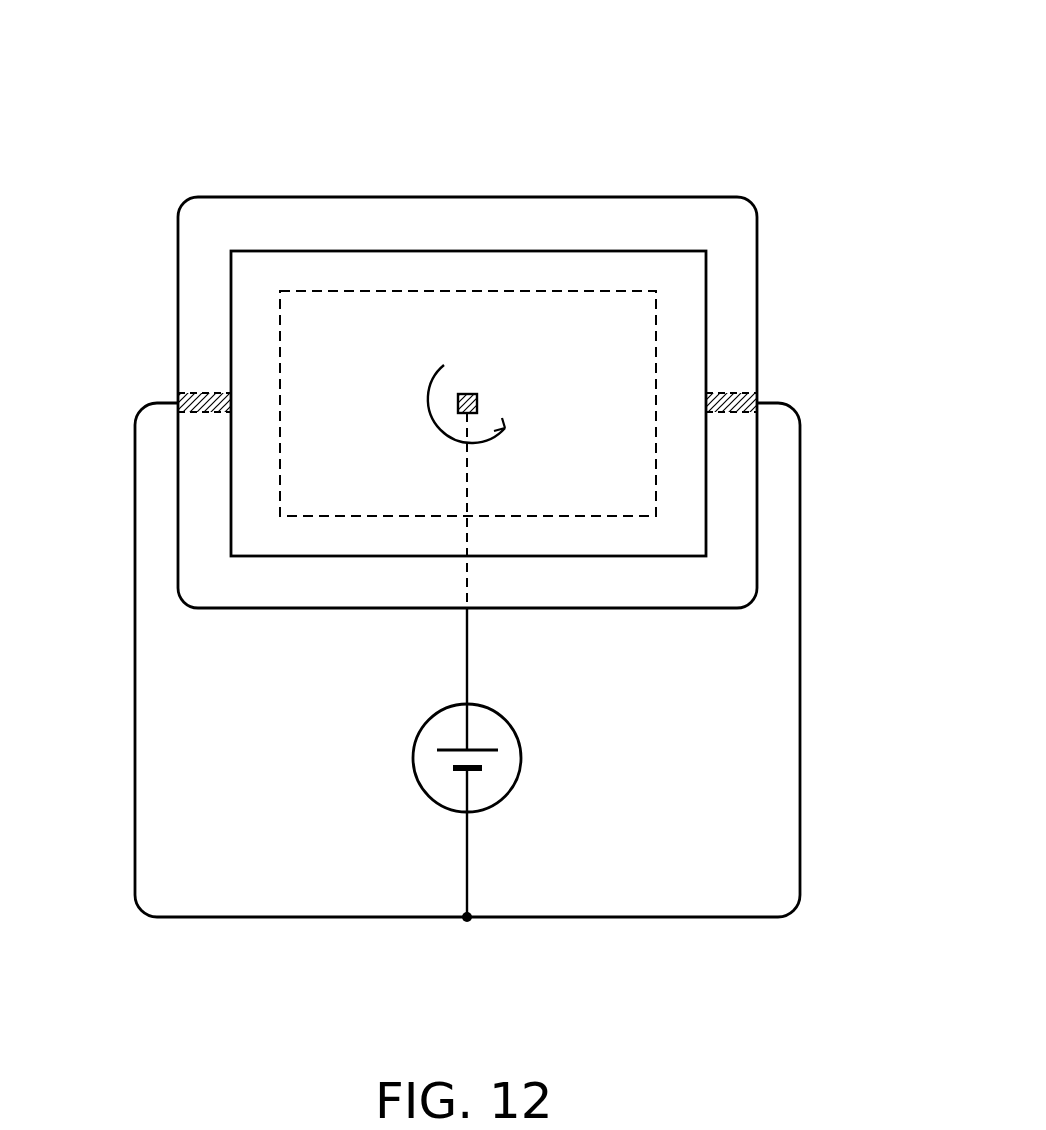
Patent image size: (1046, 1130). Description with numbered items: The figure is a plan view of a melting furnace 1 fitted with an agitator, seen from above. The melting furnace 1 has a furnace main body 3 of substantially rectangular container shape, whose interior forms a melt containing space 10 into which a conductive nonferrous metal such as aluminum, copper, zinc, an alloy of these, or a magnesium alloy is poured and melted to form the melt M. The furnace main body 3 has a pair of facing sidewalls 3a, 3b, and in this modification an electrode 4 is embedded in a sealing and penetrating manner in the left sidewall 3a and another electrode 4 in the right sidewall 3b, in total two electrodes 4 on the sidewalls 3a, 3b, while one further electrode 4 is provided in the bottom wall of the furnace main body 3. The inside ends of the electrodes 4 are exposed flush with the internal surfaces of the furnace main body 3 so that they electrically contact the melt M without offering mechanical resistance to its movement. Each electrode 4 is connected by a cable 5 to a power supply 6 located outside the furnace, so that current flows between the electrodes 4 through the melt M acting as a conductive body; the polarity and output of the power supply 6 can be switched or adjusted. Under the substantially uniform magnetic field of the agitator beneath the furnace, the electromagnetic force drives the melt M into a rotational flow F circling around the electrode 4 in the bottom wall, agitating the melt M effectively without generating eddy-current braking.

The melting furnace 1 is at (651, 161).
The furnace main body 3 is at (574, 210).
The sidewall 3a is at (186, 224).
The sidewall 3b is at (737, 233).
The melt containing space 10 is at (432, 252).
The melt M is at (306, 537).
The rotational flow F is at (422, 410).
The electrode 4 is at (200, 394).
The cable 5 is at (135, 657).
The power supply 6 is at (522, 754).